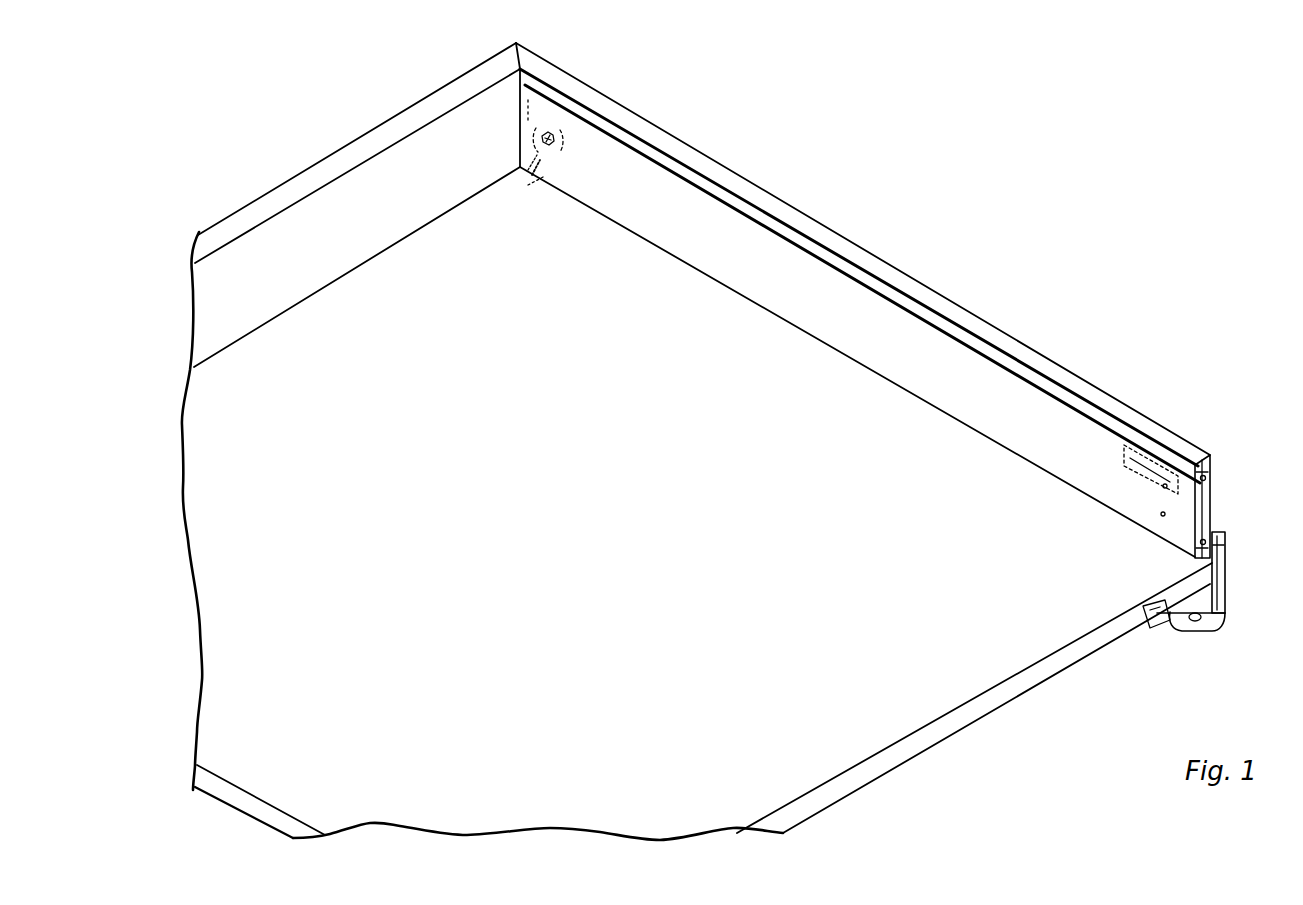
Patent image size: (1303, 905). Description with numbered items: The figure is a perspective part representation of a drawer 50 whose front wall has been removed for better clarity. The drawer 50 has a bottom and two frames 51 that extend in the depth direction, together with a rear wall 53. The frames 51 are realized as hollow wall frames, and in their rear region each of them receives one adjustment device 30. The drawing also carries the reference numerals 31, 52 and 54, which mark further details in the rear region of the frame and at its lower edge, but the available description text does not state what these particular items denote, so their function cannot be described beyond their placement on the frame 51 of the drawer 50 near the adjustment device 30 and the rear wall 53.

The adjustment device 30 is at (533, 170).
The screw 31 is at (550, 130).
The drawer 50 is at (987, 272).
The frame 51 is at (1040, 365).
The bracket 52 is at (1230, 581).
The rear wall 53 is at (420, 127).
The bottom edge 54 is at (1035, 642).